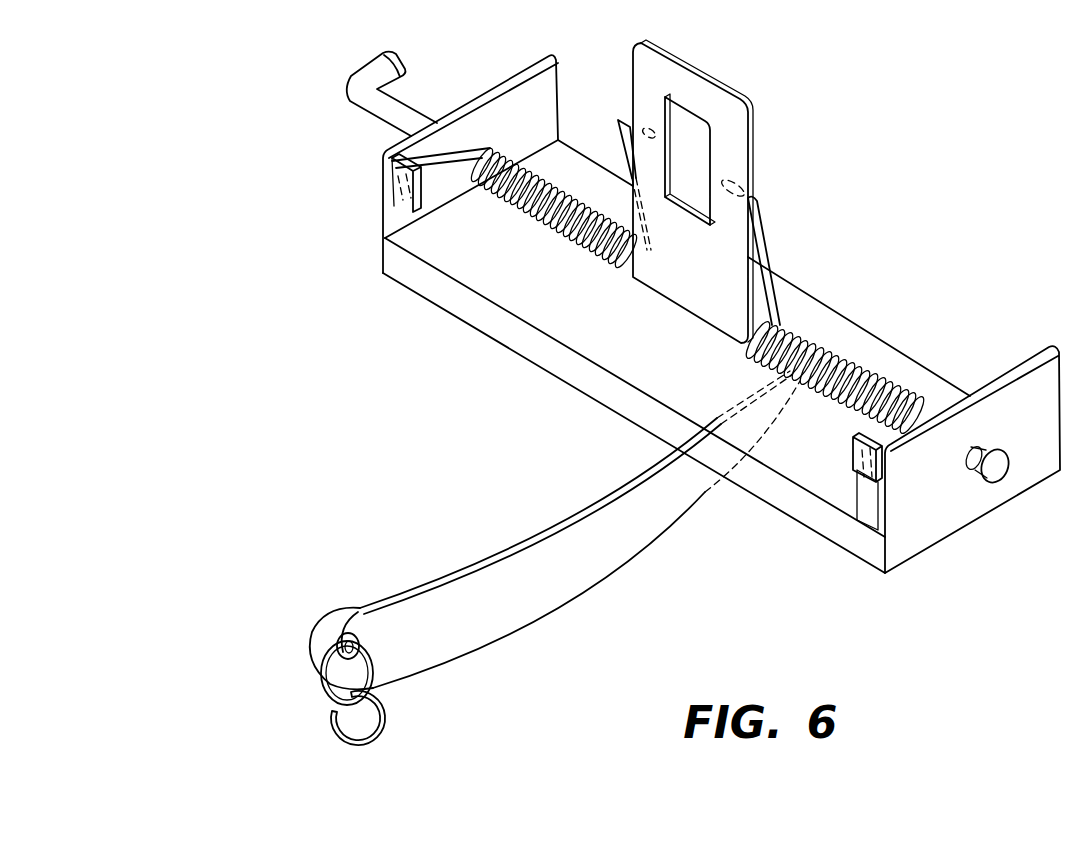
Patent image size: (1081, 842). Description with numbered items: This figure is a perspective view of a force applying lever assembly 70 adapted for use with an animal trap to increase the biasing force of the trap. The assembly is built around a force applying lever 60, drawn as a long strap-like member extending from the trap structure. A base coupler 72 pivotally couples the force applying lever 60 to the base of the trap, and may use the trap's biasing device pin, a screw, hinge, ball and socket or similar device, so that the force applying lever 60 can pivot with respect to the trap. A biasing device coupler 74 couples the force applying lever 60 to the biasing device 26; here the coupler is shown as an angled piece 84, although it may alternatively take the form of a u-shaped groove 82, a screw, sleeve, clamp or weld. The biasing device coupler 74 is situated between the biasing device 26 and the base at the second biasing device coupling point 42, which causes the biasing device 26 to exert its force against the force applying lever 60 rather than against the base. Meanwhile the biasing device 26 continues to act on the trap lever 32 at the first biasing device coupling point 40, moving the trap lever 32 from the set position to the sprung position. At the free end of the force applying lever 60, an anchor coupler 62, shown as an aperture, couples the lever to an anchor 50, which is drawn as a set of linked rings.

The force applying lever assembly 70 is at (238, 68).
The base coupler 72 is at (377, 71).
The biasing device coupler 74 is at (400, 192).
The angled piece 84 is at (393, 183).
The second biasing device coupling point 42 is at (400, 200).
The biasing device 26 is at (564, 228).
The trap lever 32 is at (733, 145).
The first biasing device coupling point 40 is at (642, 130).
The u-shaped groove 82 is at (637, 412).
The force applying lever 60 is at (507, 617).
The anchor coupler 62 is at (347, 636).
The anchor 50 is at (290, 713).